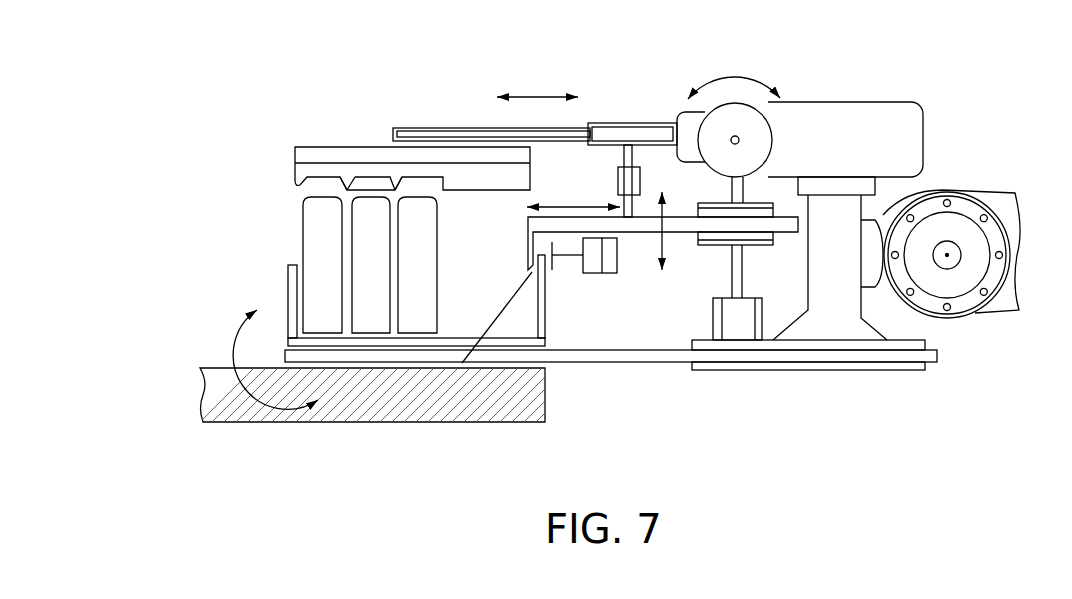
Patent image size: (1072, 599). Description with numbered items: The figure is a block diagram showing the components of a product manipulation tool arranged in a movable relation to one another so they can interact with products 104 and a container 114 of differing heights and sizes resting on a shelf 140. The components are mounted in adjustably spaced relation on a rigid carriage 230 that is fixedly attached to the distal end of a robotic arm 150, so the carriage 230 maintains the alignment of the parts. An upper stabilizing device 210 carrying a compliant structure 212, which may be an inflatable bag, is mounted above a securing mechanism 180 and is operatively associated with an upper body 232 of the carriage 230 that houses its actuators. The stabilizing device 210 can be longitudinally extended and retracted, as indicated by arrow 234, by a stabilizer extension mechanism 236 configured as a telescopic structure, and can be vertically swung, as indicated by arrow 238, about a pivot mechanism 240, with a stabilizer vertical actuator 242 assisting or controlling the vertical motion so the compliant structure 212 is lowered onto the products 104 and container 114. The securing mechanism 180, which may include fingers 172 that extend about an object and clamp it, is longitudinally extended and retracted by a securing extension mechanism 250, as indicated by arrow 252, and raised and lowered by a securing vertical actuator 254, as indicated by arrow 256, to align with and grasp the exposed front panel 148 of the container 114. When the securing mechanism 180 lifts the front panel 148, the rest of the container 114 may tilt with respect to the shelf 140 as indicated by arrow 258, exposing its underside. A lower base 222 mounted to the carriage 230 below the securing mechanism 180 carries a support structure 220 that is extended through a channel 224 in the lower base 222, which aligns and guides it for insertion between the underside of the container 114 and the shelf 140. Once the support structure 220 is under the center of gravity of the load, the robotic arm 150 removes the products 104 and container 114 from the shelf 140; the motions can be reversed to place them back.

The products 104 is at (320, 243).
The container 114 is at (295, 338).
The shelf 140 is at (400, 423).
The front panel 148 is at (538, 303).
The robotic arm 150 is at (1015, 195).
The fingers 172 is at (527, 226).
The securing mechanism 180 is at (553, 304).
The stabilizing device 210 is at (393, 132).
The compliant structure 212 is at (320, 152).
The support structure 220 is at (615, 363).
The lower base 222 is at (825, 371).
The channel 224 is at (925, 366).
The carriage 230 is at (895, 212).
The upper body 232 is at (867, 115).
The arrow 234 is at (540, 94).
The stabilizer extension mechanism 236 is at (630, 122).
The arrow 238 is at (730, 80).
The pivot mechanism 240 is at (742, 140).
The stabilizer vertical actuator 242 is at (641, 171).
The securing extension mechanism 250 is at (767, 247).
The arrow 252 is at (567, 204).
The securing vertical actuator 254 is at (713, 315).
The arrow 256 is at (657, 243).
The arrow 258 is at (232, 352).